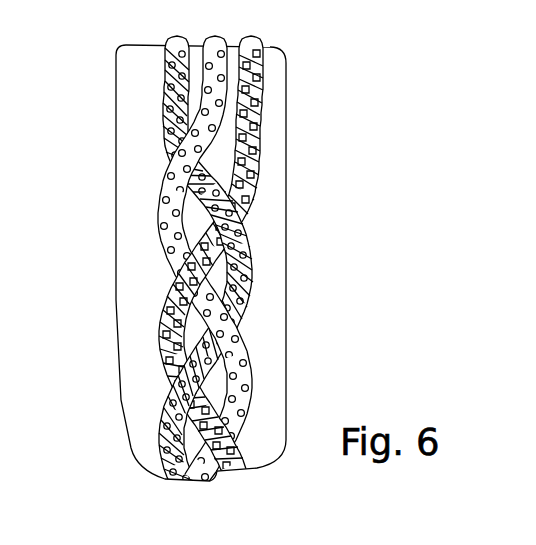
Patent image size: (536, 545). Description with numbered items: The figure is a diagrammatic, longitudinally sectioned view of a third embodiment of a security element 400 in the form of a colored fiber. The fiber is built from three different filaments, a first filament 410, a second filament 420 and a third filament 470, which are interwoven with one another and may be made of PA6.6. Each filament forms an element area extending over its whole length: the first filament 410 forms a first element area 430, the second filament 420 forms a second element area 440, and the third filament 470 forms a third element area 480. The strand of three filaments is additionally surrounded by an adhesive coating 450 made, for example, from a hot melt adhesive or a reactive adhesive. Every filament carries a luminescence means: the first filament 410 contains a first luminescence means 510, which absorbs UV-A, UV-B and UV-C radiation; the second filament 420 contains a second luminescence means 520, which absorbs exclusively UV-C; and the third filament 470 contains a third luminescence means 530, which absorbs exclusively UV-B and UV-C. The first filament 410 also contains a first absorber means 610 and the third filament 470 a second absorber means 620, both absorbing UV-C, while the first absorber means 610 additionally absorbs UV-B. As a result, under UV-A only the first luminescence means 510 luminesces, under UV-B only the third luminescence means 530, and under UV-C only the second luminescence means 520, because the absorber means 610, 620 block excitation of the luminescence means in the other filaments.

The security element 400 is at (241, 261).
The first filament 410 is at (119, 117).
The second filament 420 is at (163, 98).
The first element area 430 is at (166, 140).
The second element area 440 is at (230, 86).
The adhesive coating 450 is at (278, 205).
The third filament 470 is at (315, 118).
The third element area 480 is at (272, 138).
The first luminescence means 510 is at (198, 124).
The second luminescence means 520 is at (158, 204).
The third luminescence means 530 is at (160, 280).
The first absorber means 610 is at (161, 52).
The second absorber means 620 is at (160, 323).